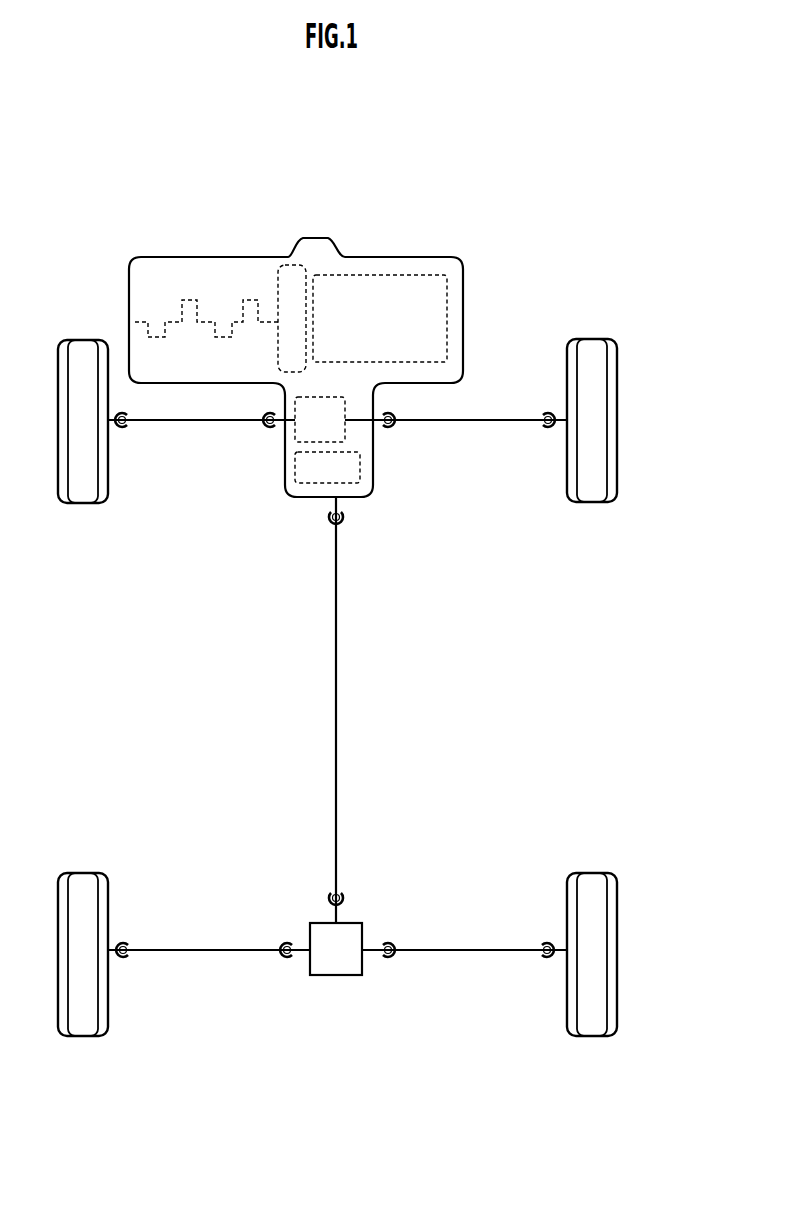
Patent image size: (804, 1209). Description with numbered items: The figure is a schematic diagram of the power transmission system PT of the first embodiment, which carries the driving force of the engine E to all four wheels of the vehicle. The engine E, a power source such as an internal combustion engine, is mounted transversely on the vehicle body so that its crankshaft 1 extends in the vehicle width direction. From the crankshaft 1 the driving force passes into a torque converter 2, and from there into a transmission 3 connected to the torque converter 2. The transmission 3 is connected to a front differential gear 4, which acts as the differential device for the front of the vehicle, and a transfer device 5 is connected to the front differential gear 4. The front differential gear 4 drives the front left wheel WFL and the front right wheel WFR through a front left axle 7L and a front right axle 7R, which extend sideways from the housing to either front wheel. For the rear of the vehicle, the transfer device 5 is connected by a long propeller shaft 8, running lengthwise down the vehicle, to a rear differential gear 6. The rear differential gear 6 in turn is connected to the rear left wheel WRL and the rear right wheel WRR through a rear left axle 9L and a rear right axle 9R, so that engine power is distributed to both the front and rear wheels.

The power transmission system PT is at (517, 191).
The engine E is at (210, 234).
The crankshaft 1 is at (190, 297).
The torque converter 2 is at (287, 263).
The transmission 3 is at (382, 275).
The front differential gear 4 is at (347, 430).
The transfer device 5 is at (362, 463).
The rear differential gear 6 is at (333, 963).
The front left axle 7L is at (195, 423).
The front right axle 7R is at (485, 422).
The propeller shaft 8 is at (338, 680).
The rear left axle 9L is at (223, 953).
The rear right axle 9R is at (463, 952).
The front left wheel WFL is at (85, 358).
The front right wheel WFR is at (590, 350).
The rear left wheel WRL is at (87, 887).
The rear right wheel WRR is at (590, 890).